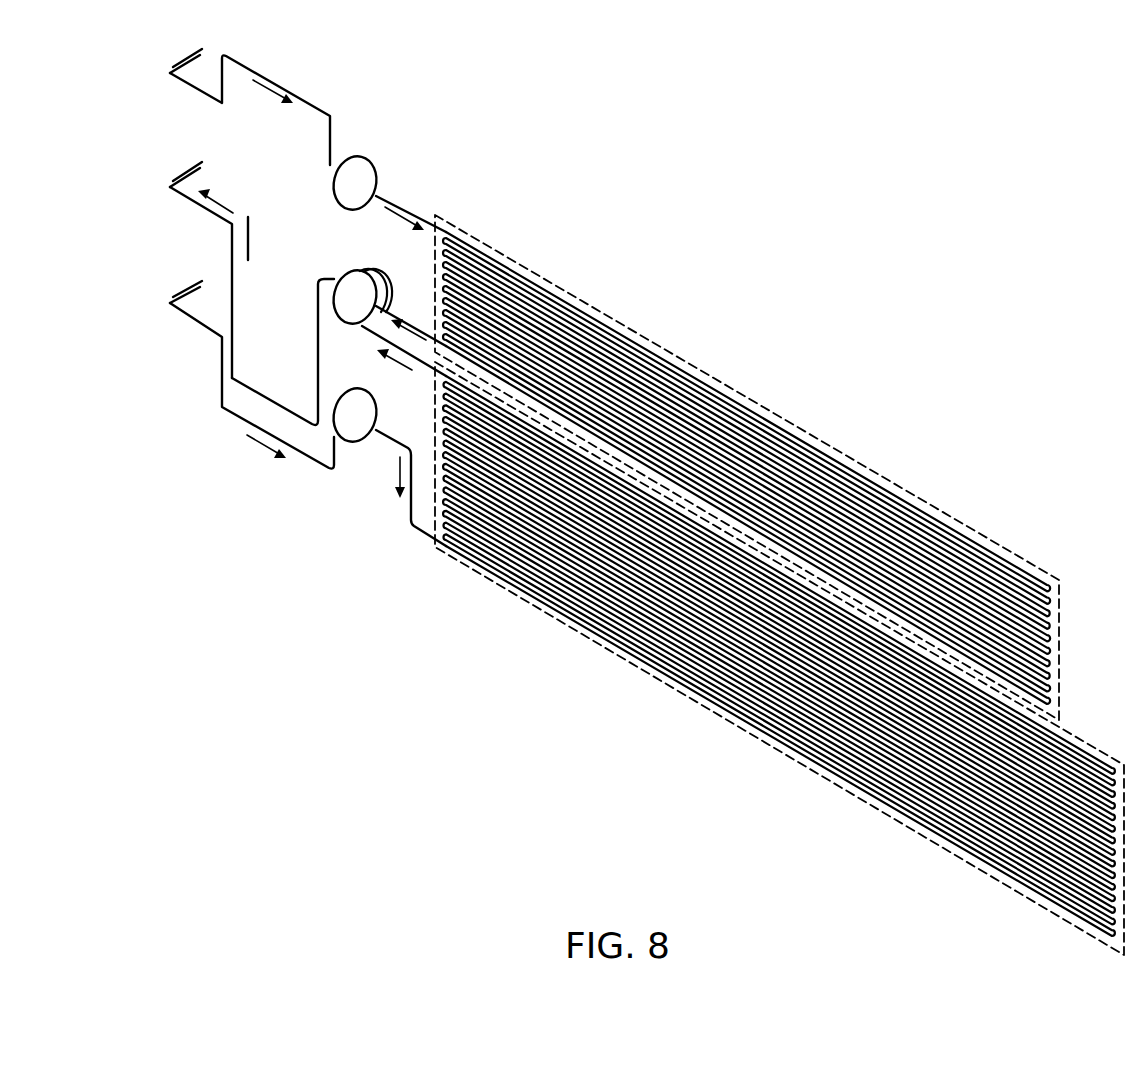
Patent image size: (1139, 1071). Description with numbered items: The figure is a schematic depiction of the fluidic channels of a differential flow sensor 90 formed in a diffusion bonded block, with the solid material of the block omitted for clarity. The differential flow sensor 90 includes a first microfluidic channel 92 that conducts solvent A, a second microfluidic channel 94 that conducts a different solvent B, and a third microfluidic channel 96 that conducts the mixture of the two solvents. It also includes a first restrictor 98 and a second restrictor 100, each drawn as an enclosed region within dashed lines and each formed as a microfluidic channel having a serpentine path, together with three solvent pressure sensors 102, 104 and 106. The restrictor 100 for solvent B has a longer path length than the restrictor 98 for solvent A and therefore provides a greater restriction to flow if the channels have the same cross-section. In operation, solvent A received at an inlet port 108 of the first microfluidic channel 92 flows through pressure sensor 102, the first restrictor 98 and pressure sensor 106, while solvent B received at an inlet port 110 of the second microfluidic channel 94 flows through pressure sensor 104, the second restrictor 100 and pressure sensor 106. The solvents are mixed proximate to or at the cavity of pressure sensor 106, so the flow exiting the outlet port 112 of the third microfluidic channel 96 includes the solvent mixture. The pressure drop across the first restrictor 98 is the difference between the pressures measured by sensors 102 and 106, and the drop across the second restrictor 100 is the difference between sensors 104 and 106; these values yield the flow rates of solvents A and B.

The differential flow sensor 90 is at (890, 302).
The first microfluidic channel 92 is at (302, 94).
The second microfluidic channel 94 is at (237, 416).
The third microfluidic channel 96 is at (263, 395).
The first restrictor 98 is at (690, 365).
The second restrictor 100 is at (643, 672).
The solvent pressure sensor 102 is at (372, 166).
The solvent pressure sensor 104 is at (353, 441).
The solvent pressure sensor 106 is at (347, 273).
The inlet port 108 is at (200, 55).
The inlet port 110 is at (200, 287).
The outlet port 112 is at (198, 164).